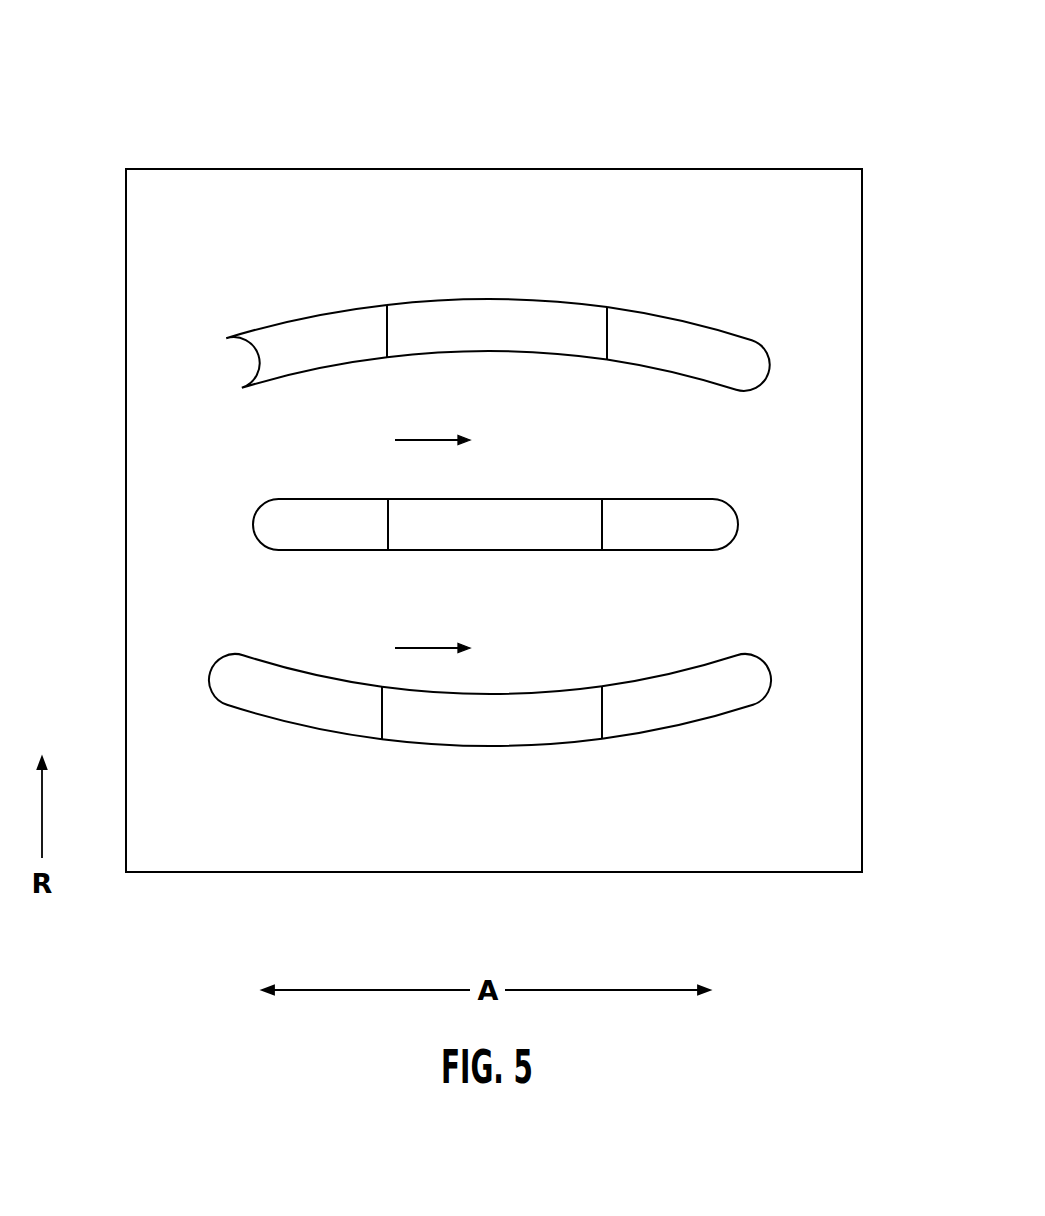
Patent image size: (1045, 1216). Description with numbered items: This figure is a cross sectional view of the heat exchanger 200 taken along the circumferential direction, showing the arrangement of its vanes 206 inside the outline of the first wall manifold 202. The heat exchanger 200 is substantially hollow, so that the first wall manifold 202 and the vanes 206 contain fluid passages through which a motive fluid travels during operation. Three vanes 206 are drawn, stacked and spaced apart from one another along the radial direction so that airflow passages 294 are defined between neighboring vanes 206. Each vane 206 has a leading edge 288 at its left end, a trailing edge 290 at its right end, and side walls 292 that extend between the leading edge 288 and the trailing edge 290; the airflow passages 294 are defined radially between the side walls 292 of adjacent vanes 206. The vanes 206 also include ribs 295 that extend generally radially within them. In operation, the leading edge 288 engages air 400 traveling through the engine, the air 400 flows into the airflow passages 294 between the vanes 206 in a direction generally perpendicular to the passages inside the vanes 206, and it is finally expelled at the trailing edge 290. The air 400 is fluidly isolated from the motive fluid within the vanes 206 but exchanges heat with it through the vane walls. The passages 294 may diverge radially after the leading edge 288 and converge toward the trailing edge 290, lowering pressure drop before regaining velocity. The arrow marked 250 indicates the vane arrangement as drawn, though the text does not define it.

The heat exchanger 200 is at (155, 70).
The first wall manifold 202 is at (863, 552).
The vane 206 is at (333, 367).
The tube bundle 250 is at (331, 318).
The leading edge 288 is at (208, 366).
The trailing edge 290 is at (771, 372).
The side wall 292 is at (540, 300).
The airflow passage 294 is at (686, 457).
The rib 295 is at (387, 333).
The air 400 is at (430, 440).